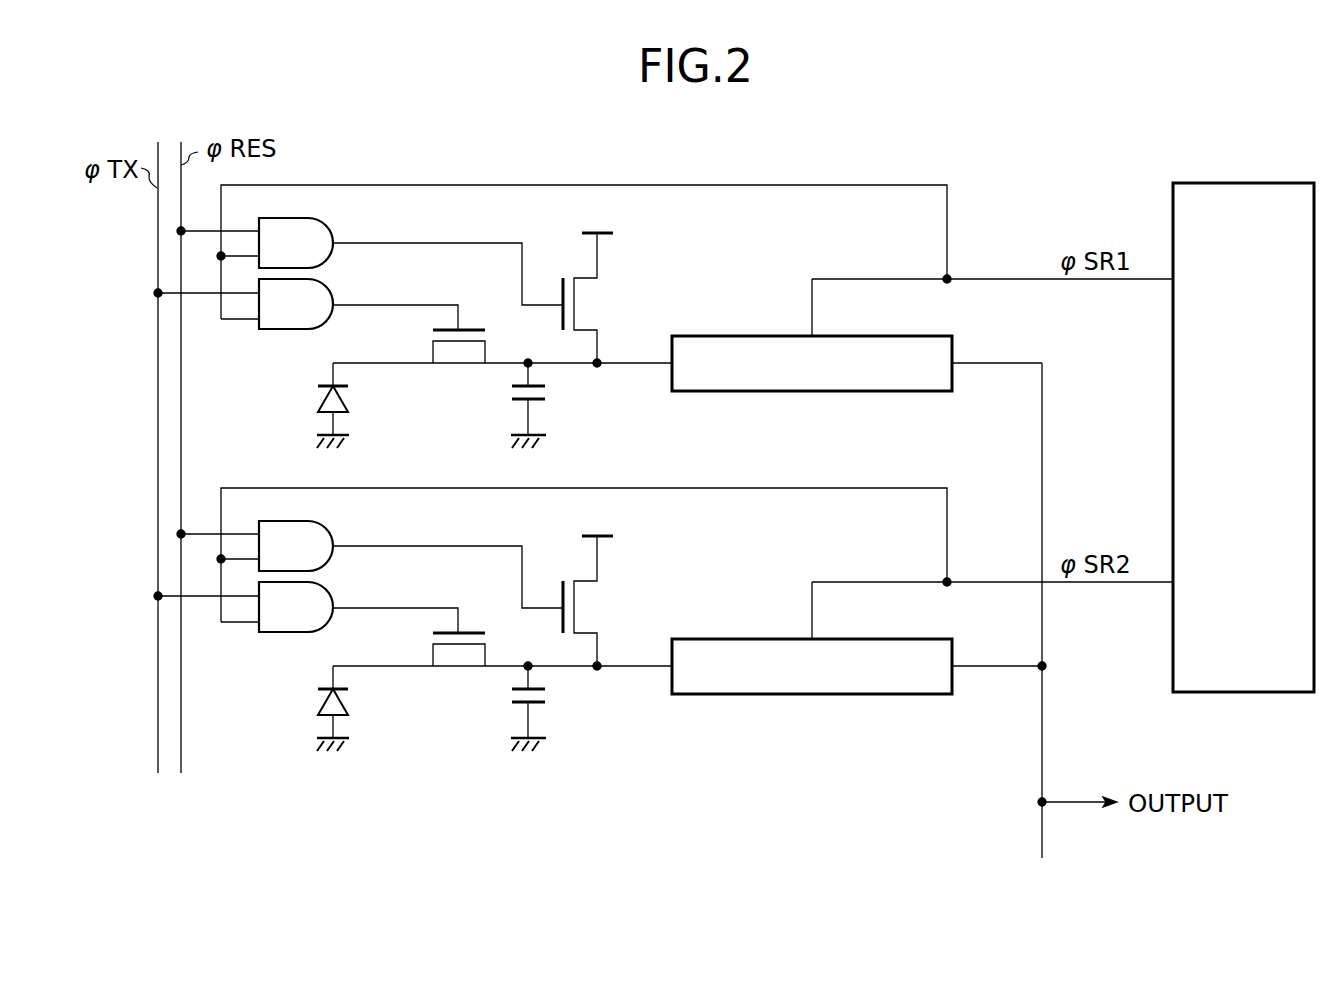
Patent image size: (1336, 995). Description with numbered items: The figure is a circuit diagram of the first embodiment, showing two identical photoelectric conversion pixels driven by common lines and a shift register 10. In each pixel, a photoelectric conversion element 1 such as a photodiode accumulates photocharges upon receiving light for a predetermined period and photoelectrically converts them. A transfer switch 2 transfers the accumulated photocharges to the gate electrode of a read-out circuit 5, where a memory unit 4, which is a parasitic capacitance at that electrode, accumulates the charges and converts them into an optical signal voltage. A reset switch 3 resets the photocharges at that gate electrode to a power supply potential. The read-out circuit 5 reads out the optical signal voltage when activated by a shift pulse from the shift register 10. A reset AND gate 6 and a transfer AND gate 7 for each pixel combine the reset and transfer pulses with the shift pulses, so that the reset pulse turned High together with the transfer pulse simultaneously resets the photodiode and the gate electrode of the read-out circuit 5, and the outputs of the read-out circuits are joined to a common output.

The photoelectric conversion element 1 is at (322, 402).
The transfer switch 2 is at (458, 355).
The reset switch 3 is at (595, 307).
The memory unit 4 is at (550, 391).
The read-out circuit 5 is at (720, 334).
The reset AND gate 6 is at (333, 222).
The transfer AND gate 7 is at (333, 283).
The shift register 10 is at (1277, 183).